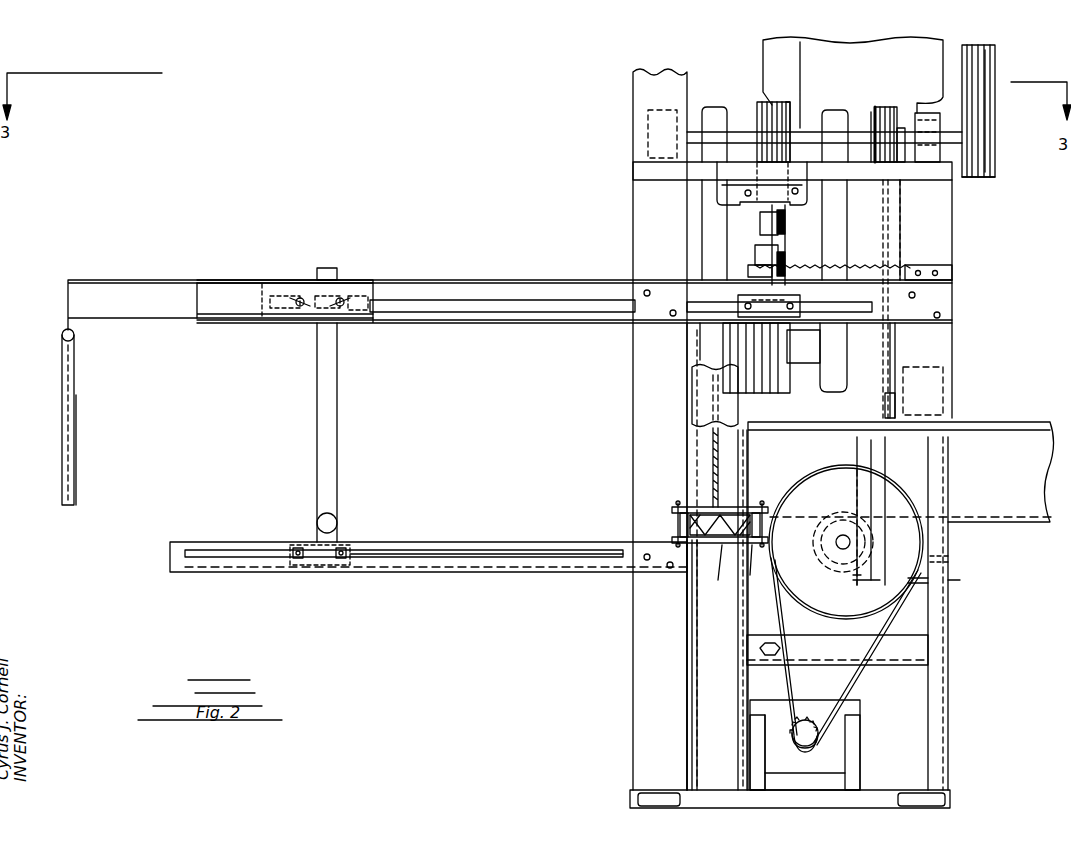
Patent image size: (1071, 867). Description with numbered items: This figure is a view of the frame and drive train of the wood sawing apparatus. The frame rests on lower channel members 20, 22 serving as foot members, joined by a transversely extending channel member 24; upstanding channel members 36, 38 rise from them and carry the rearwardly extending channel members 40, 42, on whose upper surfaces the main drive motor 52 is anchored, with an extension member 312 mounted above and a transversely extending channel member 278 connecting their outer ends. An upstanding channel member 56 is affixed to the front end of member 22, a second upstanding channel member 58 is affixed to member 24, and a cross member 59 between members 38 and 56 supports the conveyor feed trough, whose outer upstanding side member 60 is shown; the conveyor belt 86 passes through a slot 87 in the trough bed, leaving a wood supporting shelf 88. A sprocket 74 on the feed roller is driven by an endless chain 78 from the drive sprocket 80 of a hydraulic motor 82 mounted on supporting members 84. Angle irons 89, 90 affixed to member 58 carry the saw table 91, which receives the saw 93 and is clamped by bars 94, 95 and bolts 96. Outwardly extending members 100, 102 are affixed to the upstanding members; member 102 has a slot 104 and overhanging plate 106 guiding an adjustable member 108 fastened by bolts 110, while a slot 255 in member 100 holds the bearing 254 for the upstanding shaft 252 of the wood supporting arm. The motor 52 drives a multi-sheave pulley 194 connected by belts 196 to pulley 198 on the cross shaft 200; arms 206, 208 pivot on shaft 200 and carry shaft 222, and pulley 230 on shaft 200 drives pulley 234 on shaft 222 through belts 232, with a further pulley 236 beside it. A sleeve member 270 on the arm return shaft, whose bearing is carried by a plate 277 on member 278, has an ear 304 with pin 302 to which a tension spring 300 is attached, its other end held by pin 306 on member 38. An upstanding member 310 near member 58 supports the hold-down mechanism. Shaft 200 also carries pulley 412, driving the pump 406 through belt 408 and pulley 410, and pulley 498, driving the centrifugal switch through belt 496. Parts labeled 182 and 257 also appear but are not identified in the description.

The lower channel member 20 is at (635, 797).
The lower channel member 22 is at (950, 800).
The transversely extending channel member 24 is at (815, 803).
The upstanding channel member 36 is at (663, 514).
The upstanding channel member 38 is at (911, 299).
The channel member 40 is at (940, 175).
The channel member 42 is at (634, 168).
The main drive motor 52 is at (763, 50).
The upstanding channel member 56 is at (935, 733).
The upstanding channel member 58 is at (705, 670).
The cross member 59 is at (950, 555).
The outer upstanding side member 60 is at (901, 606).
The sprocket 74 is at (846, 542).
The endless chain 78 is at (888, 622).
The drive sprocket 80 is at (810, 718).
The hydraulic motor 82 is at (805, 745).
The supporting members 84 is at (763, 762).
The endless conveyor belt 86 is at (955, 585).
The slot 87 is at (830, 520).
The wood supporting shelf 88 is at (795, 515).
The angle iron 89 is at (680, 538).
The angle iron 90 is at (752, 547).
The saw table 91 is at (720, 546).
The saw 93 is at (710, 455).
The bar 94 is at (702, 580).
The bar 95 is at (696, 510).
The bolts 96 is at (672, 512).
The outwardly extending member 100 is at (432, 576).
The outwardly extending member 102 is at (512, 292).
The longitudinally extending slot 104 is at (428, 300).
The overhanging plate 106 is at (250, 283).
The adjustable member 108 is at (130, 284).
The bolts 110 is at (292, 282).
The cross brace 182 is at (893, 655).
The multi-sheave pulley 194 is at (995, 68).
The endless belts 196 is at (990, 95).
The pulley 198 is at (992, 174).
The cross shaft 200 is at (748, 130).
The arm 206 is at (845, 228).
The arm 208 is at (708, 215).
The shaft 222 is at (797, 358).
The second multi-sheave pulley 230 is at (790, 110).
The endless belts 232 is at (777, 104).
The multi-sheave pulley 234 is at (788, 392).
The second multi-sheave pulley 236 is at (725, 343).
The upstanding shaft 252 is at (316, 371).
The bearing 254 is at (298, 568).
The slot 255 is at (400, 545).
The slide block 257 is at (342, 546).
The sleeve member 270 is at (787, 257).
The plate 277 is at (762, 183).
The transversely extending channel member 278 is at (859, 174).
The tension spring 300 is at (857, 263).
The pin 302 is at (758, 262).
The second ear 304 is at (750, 272).
The pin 306 is at (910, 265).
The upstanding extending member 310 is at (715, 396).
The extension member 312 is at (640, 93).
The pump 406 is at (942, 388).
The endless belt 408 is at (893, 352).
The pulley 410 is at (883, 398).
The pulley 412 is at (890, 108).
The endless belt 496 is at (880, 108).
The pulley 498 is at (873, 113).